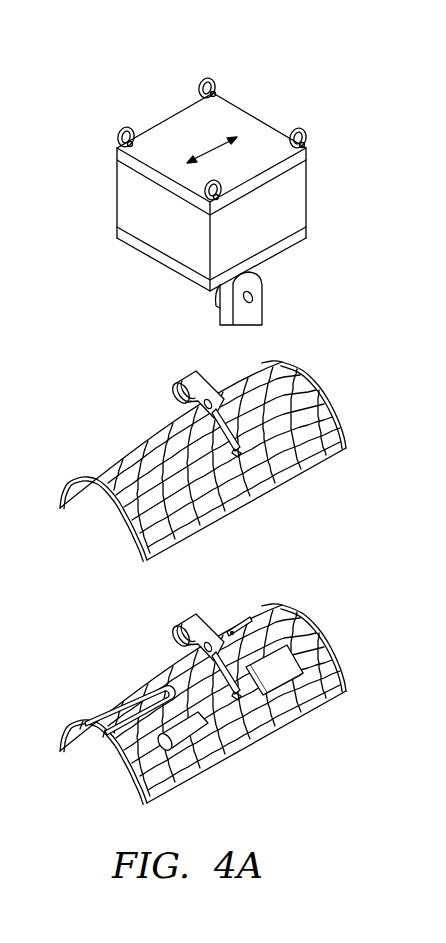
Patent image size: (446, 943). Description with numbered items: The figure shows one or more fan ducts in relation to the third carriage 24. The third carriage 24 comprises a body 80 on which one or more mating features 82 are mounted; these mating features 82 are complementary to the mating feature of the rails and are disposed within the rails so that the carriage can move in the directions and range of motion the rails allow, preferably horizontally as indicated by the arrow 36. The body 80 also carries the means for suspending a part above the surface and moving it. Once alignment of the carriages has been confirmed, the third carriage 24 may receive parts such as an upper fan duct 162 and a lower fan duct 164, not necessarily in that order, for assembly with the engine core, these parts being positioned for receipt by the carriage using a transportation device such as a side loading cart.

The third carriage 24 is at (263, 102).
The arrow 36 is at (207, 151).
The body 80 is at (123, 198).
The mating features 82 is at (218, 93).
The upper fan duct 162 is at (324, 384).
The lower fan duct 164 is at (324, 624).